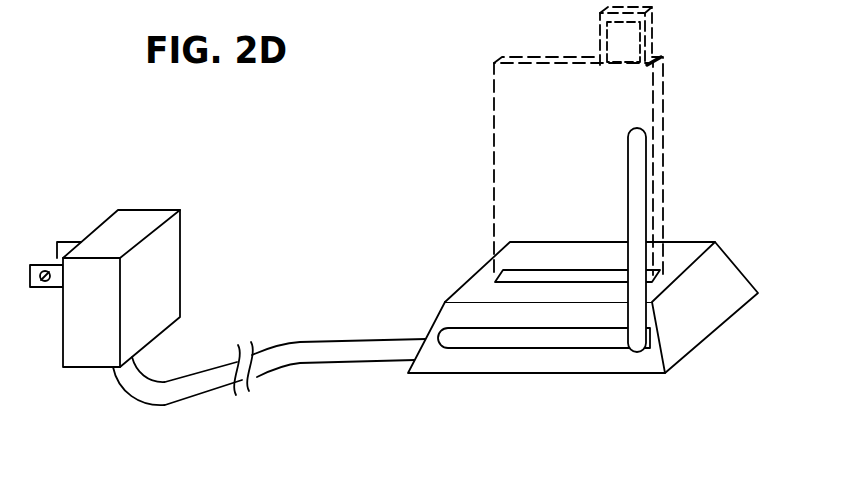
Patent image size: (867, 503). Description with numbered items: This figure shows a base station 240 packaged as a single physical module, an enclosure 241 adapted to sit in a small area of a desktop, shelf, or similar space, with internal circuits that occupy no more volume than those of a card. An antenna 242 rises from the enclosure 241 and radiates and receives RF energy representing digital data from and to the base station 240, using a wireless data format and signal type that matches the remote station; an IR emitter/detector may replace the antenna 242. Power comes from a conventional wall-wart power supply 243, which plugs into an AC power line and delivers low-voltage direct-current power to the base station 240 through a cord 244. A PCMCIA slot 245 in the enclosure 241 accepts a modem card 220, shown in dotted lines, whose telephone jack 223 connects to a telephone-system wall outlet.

The modem card 220 is at (665, 107).
The telephone jack 223 is at (658, 30).
The base station 240 is at (378, 198).
The enclosure 241 is at (685, 252).
The antenna 242 is at (628, 163).
The AC power adapter plug 243 is at (146, 209).
The cord 244 is at (325, 341).
The PCMCIA slot 245 is at (543, 275).